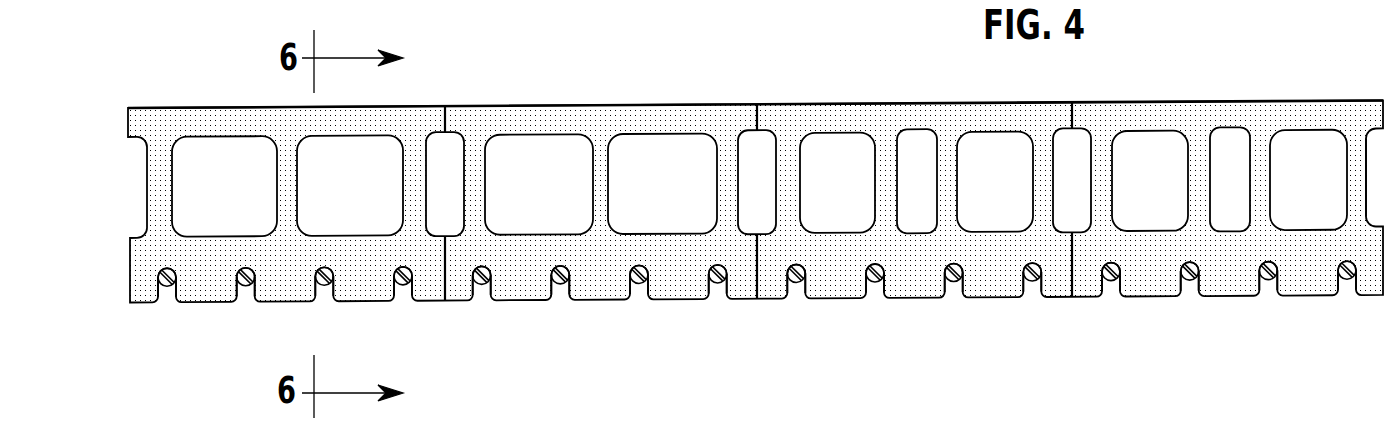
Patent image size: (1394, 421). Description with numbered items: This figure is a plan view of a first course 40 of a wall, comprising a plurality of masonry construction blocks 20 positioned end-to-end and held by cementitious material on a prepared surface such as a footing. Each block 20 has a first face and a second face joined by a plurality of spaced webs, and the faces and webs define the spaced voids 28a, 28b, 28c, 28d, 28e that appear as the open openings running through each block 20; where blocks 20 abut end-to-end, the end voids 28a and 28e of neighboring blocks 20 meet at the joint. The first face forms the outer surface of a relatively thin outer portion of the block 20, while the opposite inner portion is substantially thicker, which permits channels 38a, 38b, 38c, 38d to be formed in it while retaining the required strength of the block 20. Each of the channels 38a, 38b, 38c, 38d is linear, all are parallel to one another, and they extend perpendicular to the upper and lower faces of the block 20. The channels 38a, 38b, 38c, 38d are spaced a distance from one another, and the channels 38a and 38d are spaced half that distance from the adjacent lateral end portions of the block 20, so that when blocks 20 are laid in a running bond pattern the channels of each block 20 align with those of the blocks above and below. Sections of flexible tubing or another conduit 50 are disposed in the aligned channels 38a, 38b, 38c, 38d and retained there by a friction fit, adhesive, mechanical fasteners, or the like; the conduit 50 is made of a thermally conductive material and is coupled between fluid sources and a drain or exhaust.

The masonry construction block 20 is at (243, 107).
The first course 40 is at (108, 175).
The spaced void 28a is at (155, 157).
The spaced void 28b is at (228, 199).
The spaced void 28c is at (362, 199).
The spaced void 28d is at (1005, 209).
The spaced void 28e is at (1060, 157).
The channel 38a is at (157, 294).
The channel 38b is at (248, 293).
The channel 38c is at (322, 293).
The channel 38d is at (408, 293).
The conduit 50 is at (247, 288).